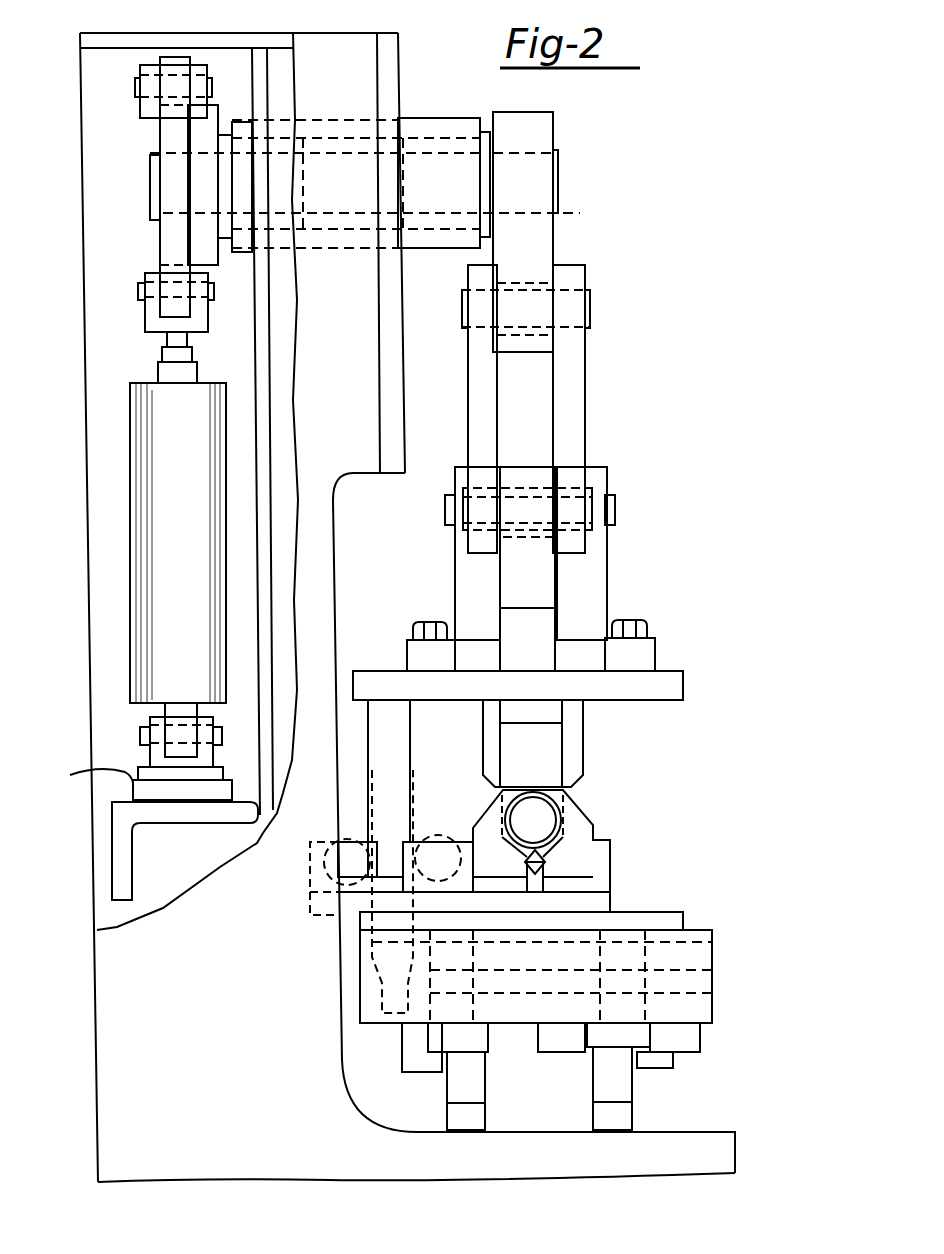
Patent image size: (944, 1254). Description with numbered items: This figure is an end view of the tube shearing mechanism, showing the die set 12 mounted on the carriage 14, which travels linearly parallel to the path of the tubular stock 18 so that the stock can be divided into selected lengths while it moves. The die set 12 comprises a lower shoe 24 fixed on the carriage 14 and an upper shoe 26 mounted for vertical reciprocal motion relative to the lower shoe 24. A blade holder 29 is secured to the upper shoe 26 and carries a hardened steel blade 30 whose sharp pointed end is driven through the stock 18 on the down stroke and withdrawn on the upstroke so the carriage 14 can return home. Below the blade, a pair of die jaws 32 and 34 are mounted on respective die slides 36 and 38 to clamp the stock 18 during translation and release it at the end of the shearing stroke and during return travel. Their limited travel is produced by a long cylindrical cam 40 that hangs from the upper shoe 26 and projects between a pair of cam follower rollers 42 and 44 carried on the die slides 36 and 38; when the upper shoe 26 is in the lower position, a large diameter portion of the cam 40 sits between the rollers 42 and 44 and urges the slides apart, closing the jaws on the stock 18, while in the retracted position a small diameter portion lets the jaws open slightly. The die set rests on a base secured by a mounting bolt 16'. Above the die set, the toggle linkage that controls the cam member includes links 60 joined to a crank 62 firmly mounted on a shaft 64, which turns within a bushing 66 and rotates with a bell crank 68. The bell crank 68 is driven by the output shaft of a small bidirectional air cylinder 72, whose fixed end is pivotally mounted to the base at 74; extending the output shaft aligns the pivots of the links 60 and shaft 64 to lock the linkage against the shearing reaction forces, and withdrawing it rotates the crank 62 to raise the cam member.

The die set 12 is at (687, 658).
The carriage 14 is at (703, 953).
The mounting bolt 16' is at (583, 1076).
The tubular stock 18 is at (570, 817).
The lower shoe 24 is at (665, 912).
The upper shoe 26 is at (682, 686).
The blade holder 29 is at (585, 742).
The blade 30 is at (585, 767).
The die jaw 32 is at (585, 832).
The die jaw 34 is at (490, 820).
The die slide 36 is at (615, 865).
The die slide 38 is at (402, 855).
The cylindrical cam 40 is at (393, 741).
The cam follower roller 42 is at (460, 838).
The cam follower roller 44 is at (336, 844).
The links 60 is at (490, 410).
The crank 62 is at (553, 242).
The shaft 64 is at (557, 180).
The bushing 66 is at (421, 118).
The bell crank 68 is at (157, 120).
The air cylinder 72 is at (153, 577).
The pivotal mounting 74 is at (132, 785).